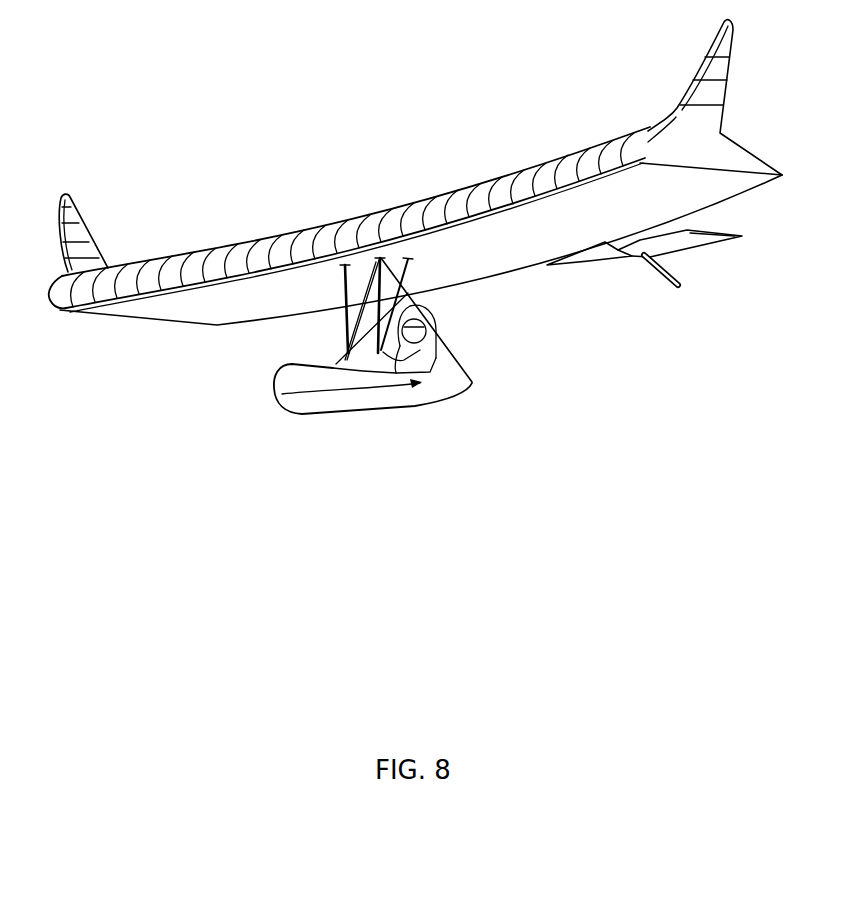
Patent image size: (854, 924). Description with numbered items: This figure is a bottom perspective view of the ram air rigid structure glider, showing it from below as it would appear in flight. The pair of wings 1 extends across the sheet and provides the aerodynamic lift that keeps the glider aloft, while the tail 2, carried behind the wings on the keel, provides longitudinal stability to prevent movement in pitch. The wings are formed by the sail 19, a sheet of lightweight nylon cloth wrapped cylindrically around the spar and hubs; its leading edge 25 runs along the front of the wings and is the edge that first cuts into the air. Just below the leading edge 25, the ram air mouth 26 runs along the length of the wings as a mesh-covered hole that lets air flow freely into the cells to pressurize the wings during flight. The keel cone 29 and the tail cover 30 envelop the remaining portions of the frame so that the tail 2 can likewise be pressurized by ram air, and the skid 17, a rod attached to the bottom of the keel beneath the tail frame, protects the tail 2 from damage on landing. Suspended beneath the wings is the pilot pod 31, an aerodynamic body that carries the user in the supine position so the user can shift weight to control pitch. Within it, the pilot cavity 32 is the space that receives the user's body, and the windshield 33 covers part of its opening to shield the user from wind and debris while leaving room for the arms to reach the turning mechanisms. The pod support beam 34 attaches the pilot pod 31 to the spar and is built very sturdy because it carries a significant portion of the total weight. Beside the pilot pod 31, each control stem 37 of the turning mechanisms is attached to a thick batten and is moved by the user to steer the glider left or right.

The pair of wings 1 is at (364, 195).
The tail 2 is at (613, 285).
The skid 17 is at (656, 278).
The sail 19 is at (282, 242).
The leading edge 25 is at (487, 211).
The ram air mouth 26 is at (580, 198).
The keel cone 29 is at (597, 252).
The tail cover 30 is at (702, 240).
The pilot pod 31 is at (378, 422).
The pilot cavity 32 is at (428, 362).
The windshield 33 is at (352, 362).
The pod support beam 34 is at (420, 300).
The control stem 37 is at (345, 286).